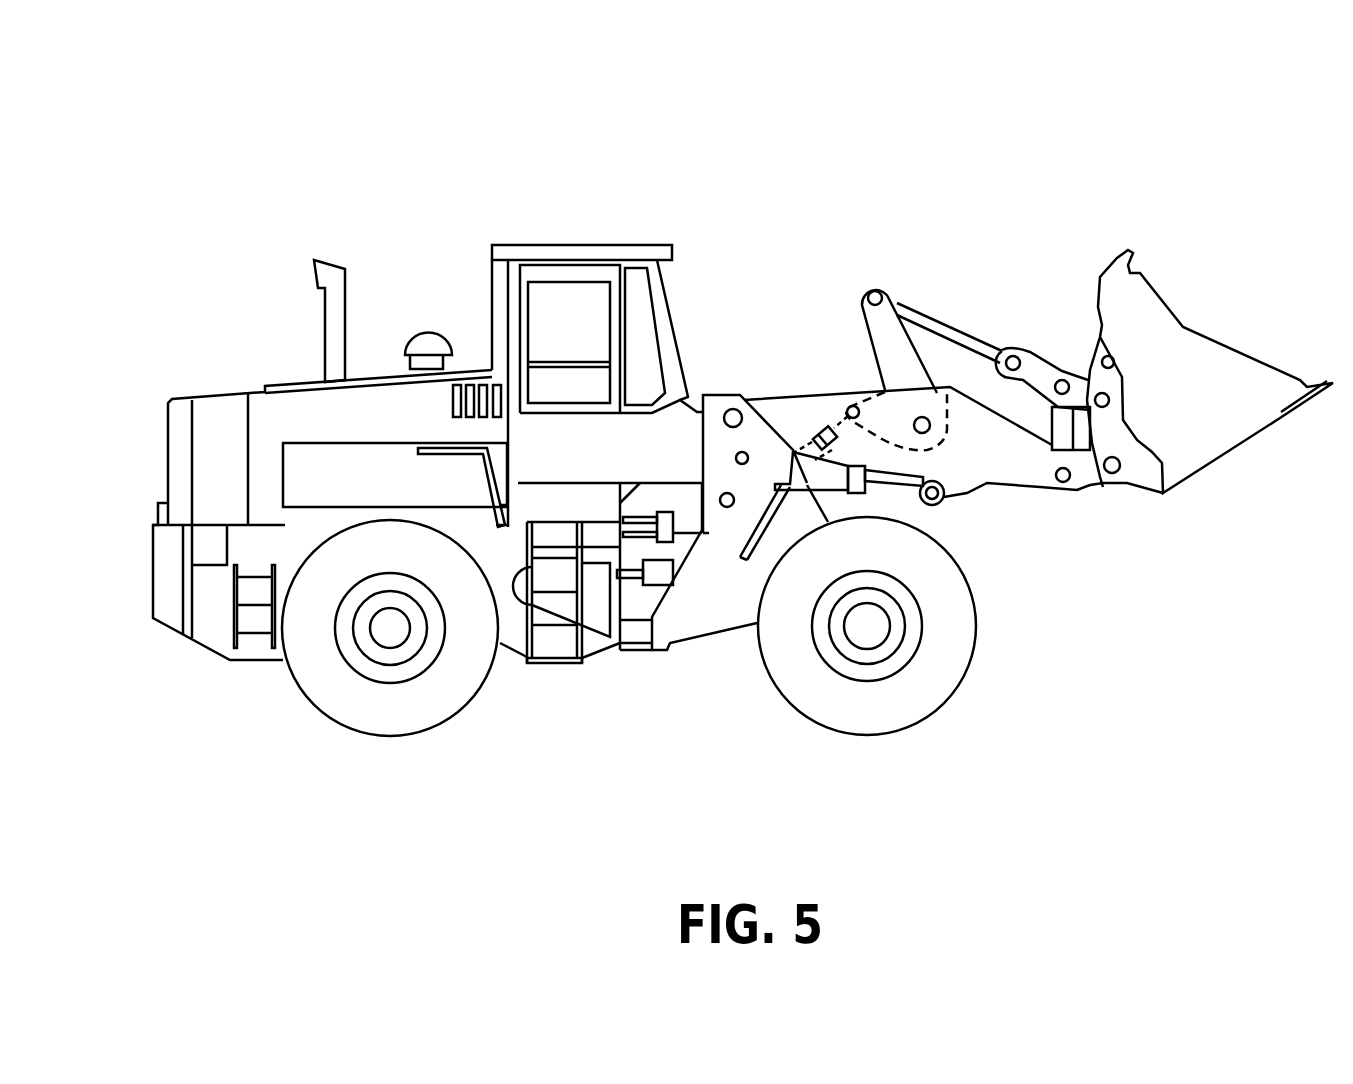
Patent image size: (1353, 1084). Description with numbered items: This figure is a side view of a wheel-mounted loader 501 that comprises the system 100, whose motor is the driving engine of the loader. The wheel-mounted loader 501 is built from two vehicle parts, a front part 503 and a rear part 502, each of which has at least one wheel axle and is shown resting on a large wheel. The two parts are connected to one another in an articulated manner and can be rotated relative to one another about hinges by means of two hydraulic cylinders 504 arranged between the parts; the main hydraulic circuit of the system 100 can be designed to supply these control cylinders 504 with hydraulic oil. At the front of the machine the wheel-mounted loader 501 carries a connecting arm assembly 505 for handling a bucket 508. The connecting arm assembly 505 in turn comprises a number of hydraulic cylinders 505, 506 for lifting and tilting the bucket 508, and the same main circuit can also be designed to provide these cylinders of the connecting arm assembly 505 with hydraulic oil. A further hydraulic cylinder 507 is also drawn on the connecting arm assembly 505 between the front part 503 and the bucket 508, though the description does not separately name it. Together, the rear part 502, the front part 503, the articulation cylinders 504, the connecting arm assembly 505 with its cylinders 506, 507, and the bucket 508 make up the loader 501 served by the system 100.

The system 100 is at (692, 459).
The wheel-mounted loader 501 is at (514, 459).
The rear part 502 is at (212, 615).
The front part 503 is at (683, 618).
The hydraulic cylinders 504 is at (688, 528).
The connecting arm assembly 505 is at (1015, 390).
The hydraulic cylinder 506 is at (818, 430).
The lift cylinder 507 is at (817, 470).
The bucket 508 is at (1193, 430).